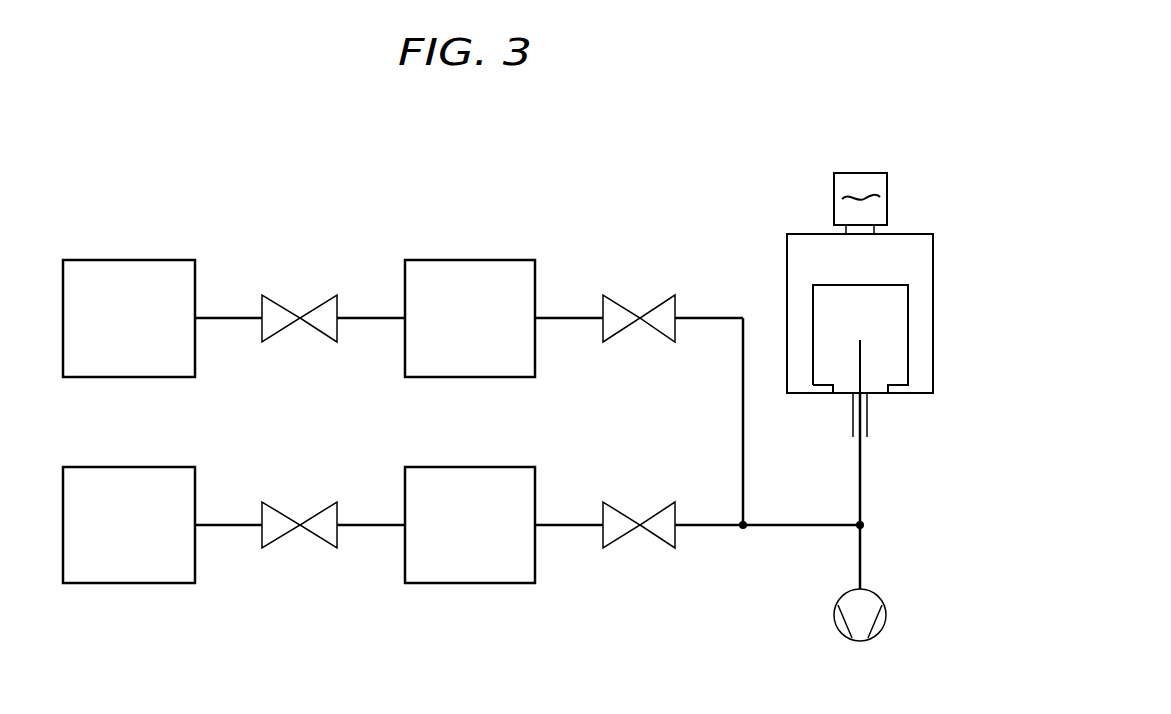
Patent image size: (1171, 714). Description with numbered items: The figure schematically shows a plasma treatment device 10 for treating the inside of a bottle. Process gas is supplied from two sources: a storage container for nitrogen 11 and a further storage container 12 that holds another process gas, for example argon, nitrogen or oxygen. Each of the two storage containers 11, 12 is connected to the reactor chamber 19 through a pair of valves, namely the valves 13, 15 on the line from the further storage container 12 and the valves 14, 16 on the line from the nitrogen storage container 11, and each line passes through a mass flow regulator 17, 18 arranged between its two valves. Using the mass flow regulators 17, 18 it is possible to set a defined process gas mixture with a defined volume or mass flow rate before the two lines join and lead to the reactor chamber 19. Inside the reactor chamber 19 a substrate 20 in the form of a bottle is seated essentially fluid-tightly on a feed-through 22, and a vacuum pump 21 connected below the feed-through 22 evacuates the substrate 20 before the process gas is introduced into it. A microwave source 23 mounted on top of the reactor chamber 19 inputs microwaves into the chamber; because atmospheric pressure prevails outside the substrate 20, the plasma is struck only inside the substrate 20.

The plasma treatment device 10 is at (1096, 129).
The storage container for nitrogen 11 is at (130, 583).
The further storage container 12 is at (130, 260).
The valve 13 is at (300, 318).
The valve 14 is at (300, 525).
The valve 15 is at (640, 318).
The valve 16 is at (640, 525).
The mass flow regulator 17 is at (470, 260).
The mass flow regulator 18 is at (470, 583).
The reactor chamber 19 is at (933, 296).
The substrate 20 is at (908, 367).
The vacuum pump 21 is at (886, 614).
The feed-through 22 is at (868, 410).
The microwave source 23 is at (887, 190).